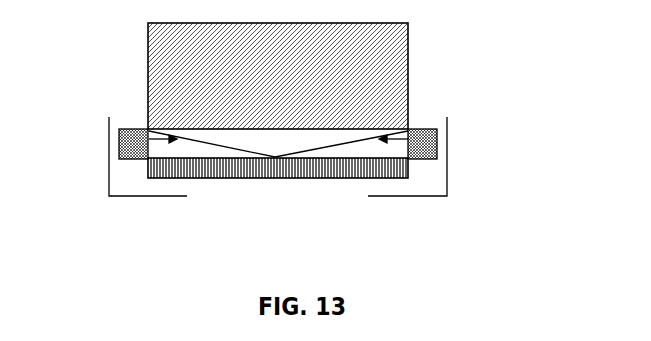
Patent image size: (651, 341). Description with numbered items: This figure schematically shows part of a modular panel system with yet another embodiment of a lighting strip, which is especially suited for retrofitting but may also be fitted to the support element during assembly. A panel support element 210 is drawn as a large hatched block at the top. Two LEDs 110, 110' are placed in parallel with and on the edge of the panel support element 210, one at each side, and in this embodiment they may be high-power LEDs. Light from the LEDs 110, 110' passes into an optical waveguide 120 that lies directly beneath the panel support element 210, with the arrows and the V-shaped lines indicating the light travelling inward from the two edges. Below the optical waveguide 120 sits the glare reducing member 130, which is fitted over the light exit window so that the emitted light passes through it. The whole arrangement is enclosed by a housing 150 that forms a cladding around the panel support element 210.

The panel support element 210 is at (398, 60).
The LED 110 is at (92, 144).
The LED 110' is at (469, 139).
The optical waveguide 120 is at (203, 148).
The glare reducing member 130 is at (352, 170).
The housing 150 is at (447, 196).